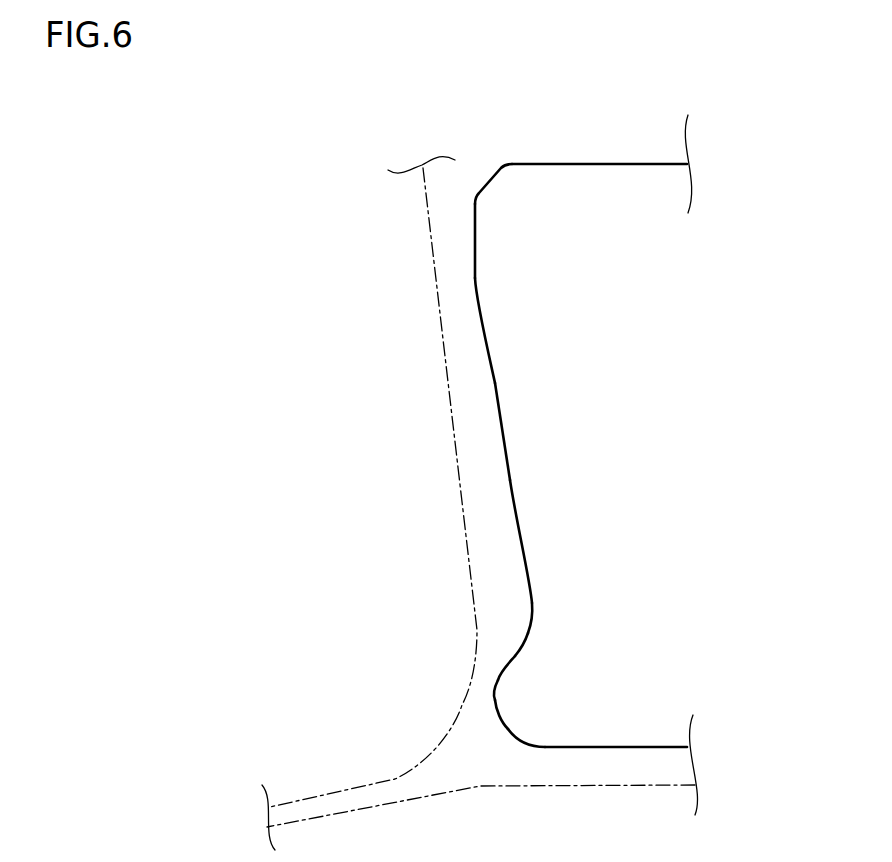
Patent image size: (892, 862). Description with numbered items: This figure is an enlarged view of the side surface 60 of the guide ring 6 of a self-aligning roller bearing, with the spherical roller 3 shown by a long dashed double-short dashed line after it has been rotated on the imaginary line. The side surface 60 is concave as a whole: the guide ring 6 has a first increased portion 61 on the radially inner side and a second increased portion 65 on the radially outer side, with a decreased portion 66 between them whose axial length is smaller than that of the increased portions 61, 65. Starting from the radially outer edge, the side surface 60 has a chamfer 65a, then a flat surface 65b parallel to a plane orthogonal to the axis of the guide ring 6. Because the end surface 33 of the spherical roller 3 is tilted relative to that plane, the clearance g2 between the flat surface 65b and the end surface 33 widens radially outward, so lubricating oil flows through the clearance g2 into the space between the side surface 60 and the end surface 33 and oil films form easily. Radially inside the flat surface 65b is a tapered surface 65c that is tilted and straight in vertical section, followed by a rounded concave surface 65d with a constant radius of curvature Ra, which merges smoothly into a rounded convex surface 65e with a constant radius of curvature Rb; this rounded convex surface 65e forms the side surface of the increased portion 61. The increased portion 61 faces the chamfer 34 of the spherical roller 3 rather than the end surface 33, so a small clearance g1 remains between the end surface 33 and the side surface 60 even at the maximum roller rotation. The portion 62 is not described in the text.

The upper flange portion 62 is at (622, 164).
The chamfer 65a is at (492, 176).
The flat surface 65b is at (488, 250).
The second increased portion 65 is at (477, 250).
The side surface 60 is at (481, 423).
The tapered surface 65c is at (508, 483).
The decreased portion 66 is at (530, 597).
The radius of curvature Ra is at (518, 614).
The rounded concave surface 65d is at (523, 642).
The increased portion 61 is at (510, 680).
The rounded convex surface 65e is at (497, 705).
The radius of curvature Rb is at (528, 727).
The guide ring 6 is at (610, 733).
The clearance g1 is at (472, 332).
The clearance g2 is at (449, 203).
The end surface 33 is at (450, 387).
The spherical roller 3 is at (410, 748).
The chamfer 34 is at (452, 730).